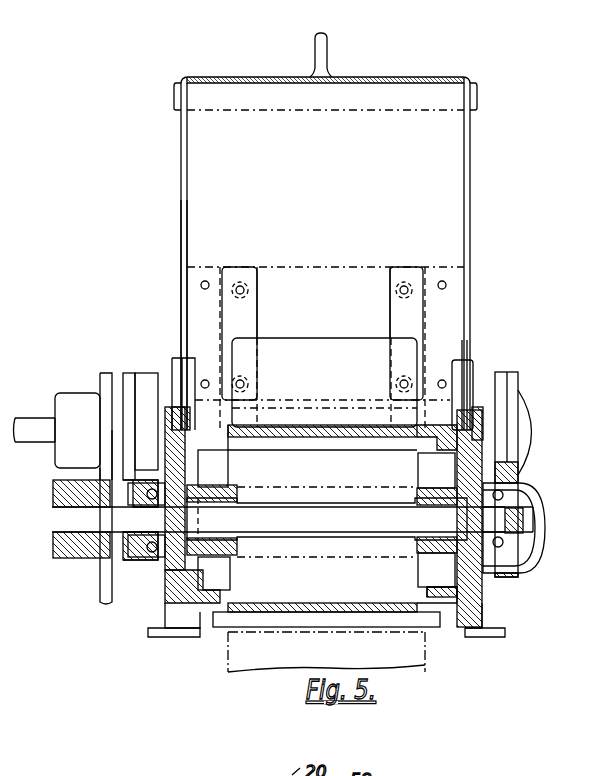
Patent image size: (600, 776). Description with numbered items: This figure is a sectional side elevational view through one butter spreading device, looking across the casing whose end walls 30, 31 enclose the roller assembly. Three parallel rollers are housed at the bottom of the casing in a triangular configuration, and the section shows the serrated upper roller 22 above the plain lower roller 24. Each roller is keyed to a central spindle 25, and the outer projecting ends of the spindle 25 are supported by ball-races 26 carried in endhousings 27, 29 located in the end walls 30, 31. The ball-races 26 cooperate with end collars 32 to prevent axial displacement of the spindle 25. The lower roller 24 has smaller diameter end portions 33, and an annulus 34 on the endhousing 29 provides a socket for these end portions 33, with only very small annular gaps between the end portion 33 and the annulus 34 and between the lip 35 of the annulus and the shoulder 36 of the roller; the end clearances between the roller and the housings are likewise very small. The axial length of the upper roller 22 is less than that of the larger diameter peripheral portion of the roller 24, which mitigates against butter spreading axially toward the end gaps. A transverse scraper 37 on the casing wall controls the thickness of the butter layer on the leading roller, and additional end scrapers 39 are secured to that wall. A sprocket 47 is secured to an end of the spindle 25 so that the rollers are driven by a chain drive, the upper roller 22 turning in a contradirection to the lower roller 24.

The upper roller 22 is at (417, 358).
The plain roller 24 is at (388, 440).
The central spindle 25 is at (410, 535).
The ball-race 26 is at (505, 495).
The endhousing 27 is at (160, 385).
The endhousing 29 is at (510, 460).
The end wall 30 is at (462, 230).
The end wall 31 is at (186, 230).
The end collar 32 is at (523, 525).
The smaller diameter end portion 33 is at (212, 450).
The annulus 34 is at (213, 415).
The lip 35 is at (235, 438).
The shoulder 36 is at (237, 415).
The transverse scraper 37 is at (263, 285).
The end scraper 39 is at (199, 276).
The sprocket 47 is at (70, 398).